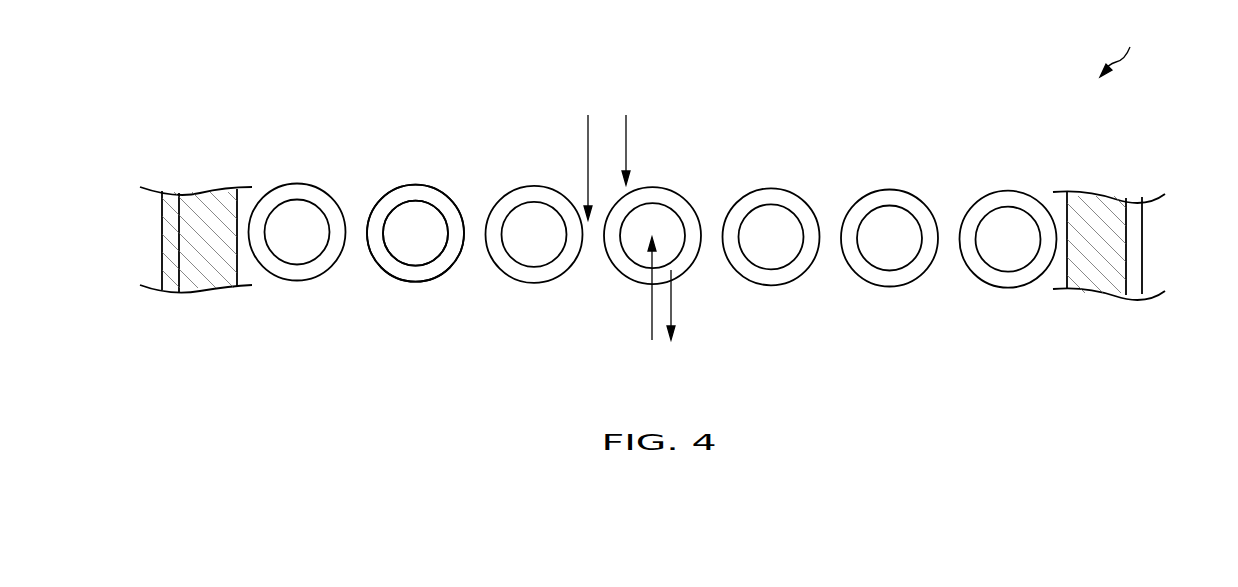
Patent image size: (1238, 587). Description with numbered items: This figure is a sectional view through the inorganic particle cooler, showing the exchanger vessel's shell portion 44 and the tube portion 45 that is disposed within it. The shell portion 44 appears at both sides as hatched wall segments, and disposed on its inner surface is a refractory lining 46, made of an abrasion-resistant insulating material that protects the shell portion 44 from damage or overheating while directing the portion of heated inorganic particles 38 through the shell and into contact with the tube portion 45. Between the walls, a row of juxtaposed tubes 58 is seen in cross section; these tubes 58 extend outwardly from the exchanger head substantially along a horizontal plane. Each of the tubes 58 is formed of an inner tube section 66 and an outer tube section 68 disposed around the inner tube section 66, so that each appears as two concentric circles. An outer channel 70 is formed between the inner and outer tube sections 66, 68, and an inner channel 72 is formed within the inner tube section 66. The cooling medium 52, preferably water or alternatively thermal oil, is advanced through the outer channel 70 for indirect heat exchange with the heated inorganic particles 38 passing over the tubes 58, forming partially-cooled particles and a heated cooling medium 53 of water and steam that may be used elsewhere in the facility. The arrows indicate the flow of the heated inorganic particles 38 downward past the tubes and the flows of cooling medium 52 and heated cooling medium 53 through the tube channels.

The portion of heated inorganic particles 38 is at (587, 152).
The shell portion 44 is at (161, 258).
The tube portion 45 is at (1131, 57).
The refractory lining 46 is at (203, 283).
The cooling medium 52 is at (322, 198).
The heated cooling medium 53 is at (282, 245).
The tubes 58 is at (330, 273).
The inner tube section 66 is at (408, 267).
The outer tube section 68 is at (443, 277).
The outer channel 70 is at (438, 197).
The inner channel 72 is at (407, 220).